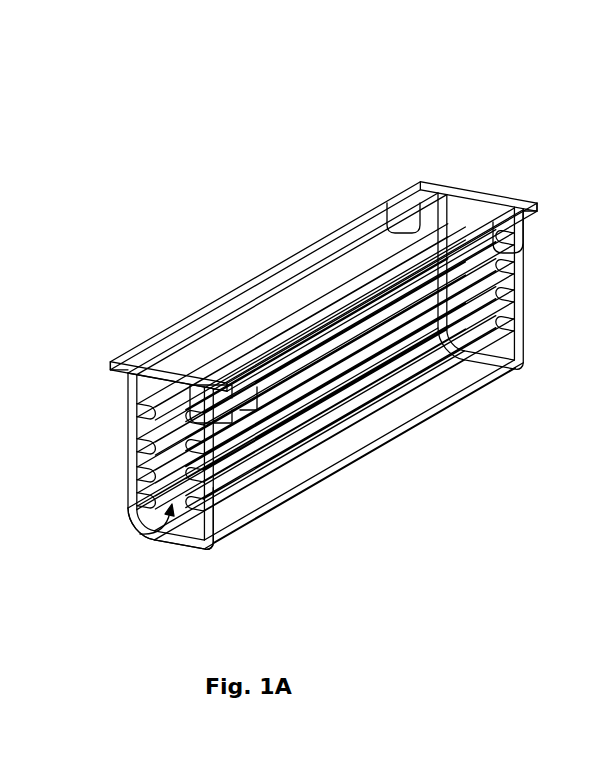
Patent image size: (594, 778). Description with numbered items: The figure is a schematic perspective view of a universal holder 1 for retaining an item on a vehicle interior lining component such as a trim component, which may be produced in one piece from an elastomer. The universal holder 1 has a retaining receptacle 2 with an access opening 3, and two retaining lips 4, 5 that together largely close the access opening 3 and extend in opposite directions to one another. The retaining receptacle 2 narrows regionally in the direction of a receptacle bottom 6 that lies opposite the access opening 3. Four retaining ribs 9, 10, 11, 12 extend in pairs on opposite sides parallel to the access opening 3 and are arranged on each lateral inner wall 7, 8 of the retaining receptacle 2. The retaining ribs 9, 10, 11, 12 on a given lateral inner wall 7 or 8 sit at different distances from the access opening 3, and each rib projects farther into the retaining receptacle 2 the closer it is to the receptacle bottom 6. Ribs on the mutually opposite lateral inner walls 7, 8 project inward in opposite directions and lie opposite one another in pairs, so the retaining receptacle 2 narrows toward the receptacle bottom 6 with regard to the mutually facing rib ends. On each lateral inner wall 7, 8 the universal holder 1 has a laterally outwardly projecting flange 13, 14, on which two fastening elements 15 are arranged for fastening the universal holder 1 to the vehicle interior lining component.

The universal holder 1 is at (355, 167).
The retaining receptacle 2 is at (145, 535).
The access opening 3 is at (178, 370).
The retaining lip 4 is at (458, 190).
The retaining lip 5 is at (507, 197).
The receptacle bottom 6 is at (165, 550).
The lateral inner wall 7 is at (135, 455).
The lateral inner wall 8 is at (225, 522).
The retaining rib 9 is at (148, 405).
The retaining rib 10 is at (140, 430).
The retaining rib 11 is at (130, 487).
The retaining rib 12 is at (135, 513).
The flange 13 is at (125, 362).
The flange 14 is at (540, 200).
The fastening element 15 is at (393, 215).